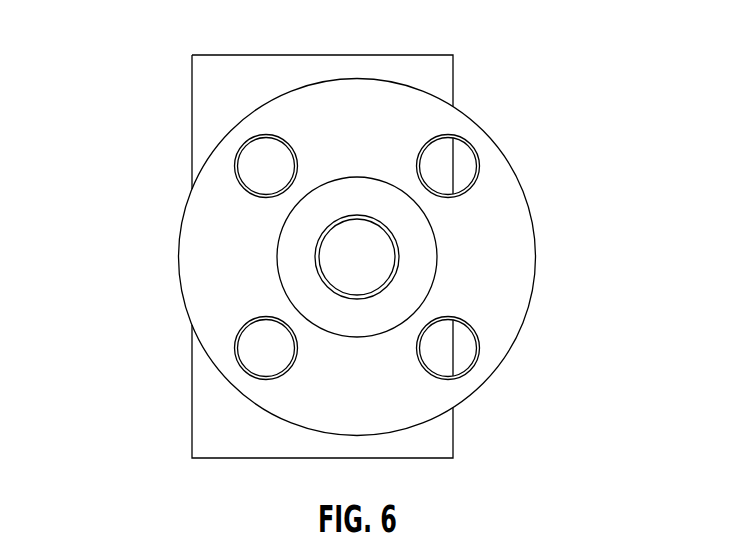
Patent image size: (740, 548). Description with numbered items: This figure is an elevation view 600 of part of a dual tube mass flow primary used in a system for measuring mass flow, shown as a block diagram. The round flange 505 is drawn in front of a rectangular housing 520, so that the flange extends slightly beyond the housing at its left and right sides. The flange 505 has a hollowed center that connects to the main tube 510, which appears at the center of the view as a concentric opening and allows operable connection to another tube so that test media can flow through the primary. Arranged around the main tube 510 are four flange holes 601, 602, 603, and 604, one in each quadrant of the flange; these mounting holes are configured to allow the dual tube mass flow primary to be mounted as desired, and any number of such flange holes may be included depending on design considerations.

The elevation view 600 is at (93, 30).
The housing 520 is at (192, 108).
The flange 505 is at (195, 229).
The main tube 510 is at (363, 278).
The flange hole 601 is at (255, 172).
The flange hole 602 is at (437, 170).
The flange hole 603 is at (248, 352).
The flange hole 604 is at (444, 352).